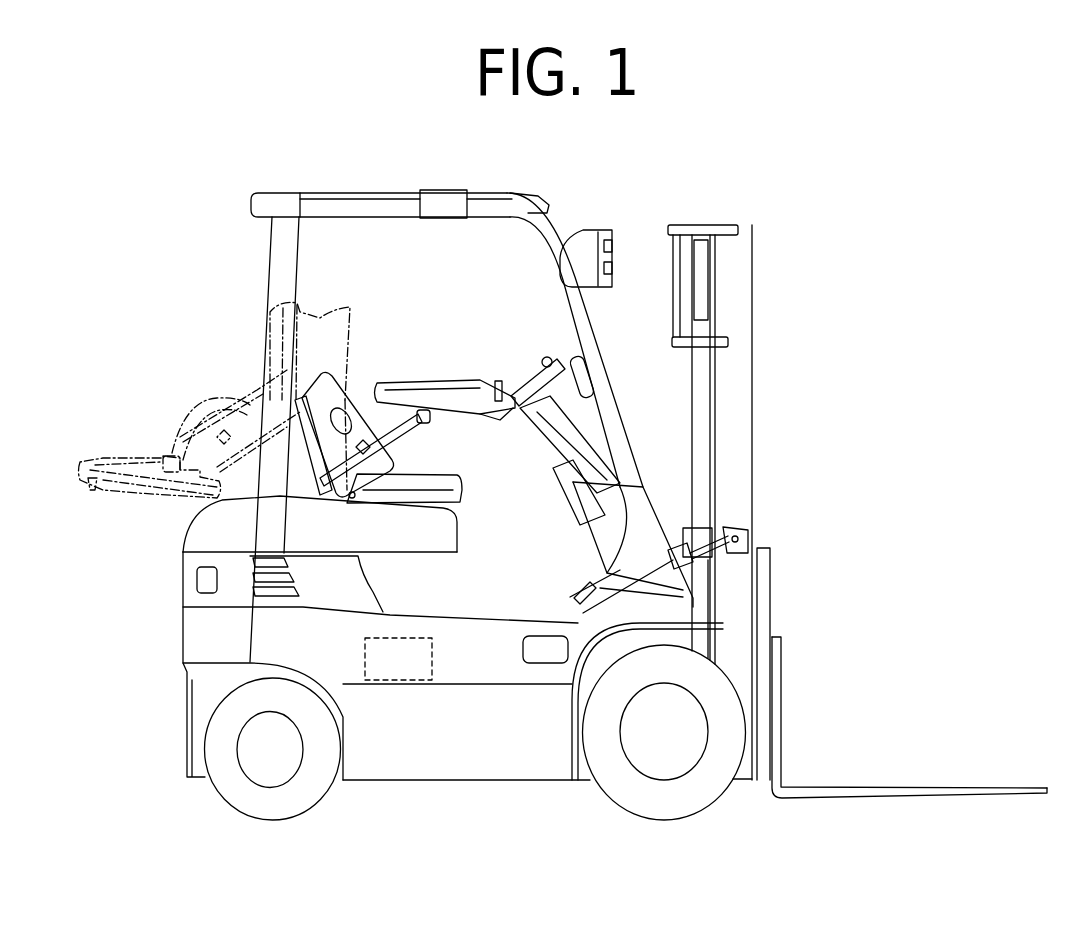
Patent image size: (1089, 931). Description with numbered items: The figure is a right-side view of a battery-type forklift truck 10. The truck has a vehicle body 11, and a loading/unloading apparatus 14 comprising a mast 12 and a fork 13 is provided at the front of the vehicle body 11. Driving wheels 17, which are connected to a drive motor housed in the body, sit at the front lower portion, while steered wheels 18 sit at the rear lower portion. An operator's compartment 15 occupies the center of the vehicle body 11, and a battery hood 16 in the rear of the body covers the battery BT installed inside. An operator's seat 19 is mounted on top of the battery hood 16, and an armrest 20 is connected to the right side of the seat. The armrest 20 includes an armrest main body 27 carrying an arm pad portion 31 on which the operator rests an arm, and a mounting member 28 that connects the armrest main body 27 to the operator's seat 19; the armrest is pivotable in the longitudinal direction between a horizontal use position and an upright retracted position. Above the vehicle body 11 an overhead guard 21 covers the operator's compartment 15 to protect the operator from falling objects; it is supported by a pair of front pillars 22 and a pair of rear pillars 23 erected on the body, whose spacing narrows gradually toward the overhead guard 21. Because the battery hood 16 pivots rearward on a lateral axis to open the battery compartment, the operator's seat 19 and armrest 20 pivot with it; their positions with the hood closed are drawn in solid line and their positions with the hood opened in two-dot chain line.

The forklift truck 10 is at (563, 490).
The vehicle body 11 is at (446, 776).
The mast 12 is at (740, 388).
The fork 13 is at (867, 787).
The loading/unloading apparatus 14 is at (857, 511).
The operator's compartment 15 is at (376, 243).
The battery hood 16 is at (345, 306).
The driving wheels 17 is at (666, 808).
The steered wheels 18 is at (264, 806).
The operator's seat 19 is at (266, 343).
The armrest 20 is at (308, 437).
The overhead guard 21 is at (518, 193).
The front pillars 22 is at (596, 344).
The rear pillars 23 is at (282, 247).
The armrest main body 27 is at (471, 414).
The mounting member 28 is at (405, 447).
The arm pad portion 31 is at (411, 382).
The battery BT is at (432, 660).